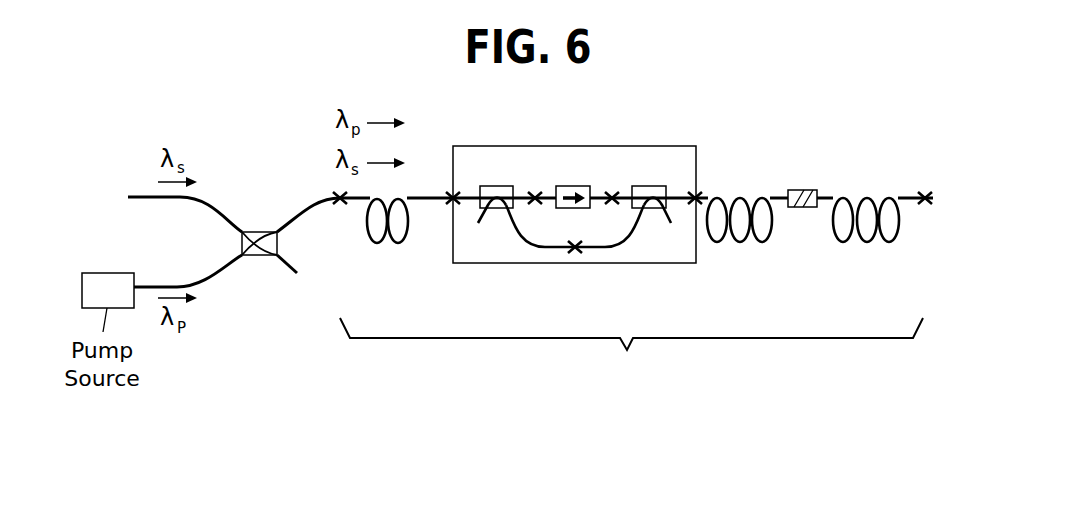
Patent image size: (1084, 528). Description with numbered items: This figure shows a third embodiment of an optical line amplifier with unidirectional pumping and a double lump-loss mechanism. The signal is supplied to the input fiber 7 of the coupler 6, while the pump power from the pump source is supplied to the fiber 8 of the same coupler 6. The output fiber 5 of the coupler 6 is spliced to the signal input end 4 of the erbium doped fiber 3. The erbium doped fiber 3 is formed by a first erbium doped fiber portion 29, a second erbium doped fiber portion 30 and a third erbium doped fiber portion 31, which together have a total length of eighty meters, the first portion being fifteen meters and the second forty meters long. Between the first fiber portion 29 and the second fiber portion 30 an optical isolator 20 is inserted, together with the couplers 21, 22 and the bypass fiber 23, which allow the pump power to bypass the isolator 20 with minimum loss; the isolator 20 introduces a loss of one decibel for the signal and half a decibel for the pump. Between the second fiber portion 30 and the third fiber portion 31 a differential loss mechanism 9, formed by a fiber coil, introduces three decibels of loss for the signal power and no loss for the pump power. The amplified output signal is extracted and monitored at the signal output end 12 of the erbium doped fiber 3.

The erbium doped fiber 3 is at (631, 353).
The signal input end 4 is at (340, 206).
The output fiber of coupler 5 is at (318, 194).
The coupler 6 is at (261, 274).
The input fiber 7 is at (130, 199).
The fiber 8 is at (199, 281).
The differential loss mechanism 9 is at (802, 190).
The signal output end 12 is at (923, 192).
The optical isolator 20 is at (583, 186).
The coupler 21 is at (497, 186).
The coupler 22 is at (658, 186).
The bypass fiber 23 is at (597, 252).
The first erbium doped fiber portion 29 is at (372, 246).
The second erbium doped fiber portion 30 is at (765, 244).
The third erbium doped fiber portion 31 is at (865, 244).